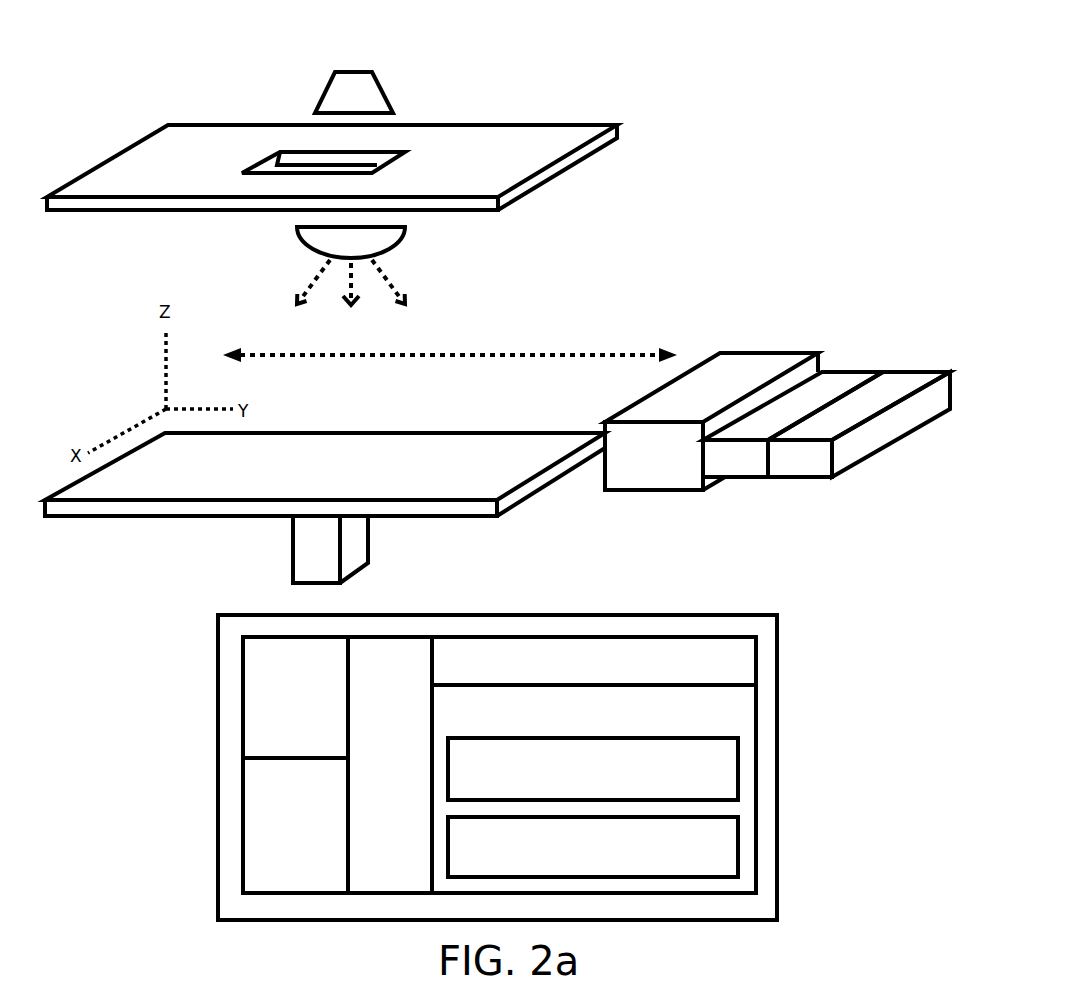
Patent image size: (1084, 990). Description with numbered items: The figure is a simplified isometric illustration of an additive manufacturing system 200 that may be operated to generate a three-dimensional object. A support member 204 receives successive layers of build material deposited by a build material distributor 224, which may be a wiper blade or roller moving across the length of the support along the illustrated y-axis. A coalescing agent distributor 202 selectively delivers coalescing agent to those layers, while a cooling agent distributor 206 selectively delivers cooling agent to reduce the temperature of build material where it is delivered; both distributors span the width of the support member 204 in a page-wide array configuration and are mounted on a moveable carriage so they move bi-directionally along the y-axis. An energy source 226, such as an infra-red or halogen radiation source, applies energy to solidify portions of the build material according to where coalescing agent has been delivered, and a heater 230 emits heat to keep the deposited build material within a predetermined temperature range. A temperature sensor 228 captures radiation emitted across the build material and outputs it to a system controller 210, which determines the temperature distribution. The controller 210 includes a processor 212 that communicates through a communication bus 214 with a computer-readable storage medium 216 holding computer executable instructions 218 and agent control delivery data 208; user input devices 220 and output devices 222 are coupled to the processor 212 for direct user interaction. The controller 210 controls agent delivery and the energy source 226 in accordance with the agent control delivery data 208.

The additive manufacturing system 200 is at (779, 56).
The coalescing agent distributor 202 is at (895, 372).
The support member 204 is at (452, 433).
The cooling agent distributor 206 is at (827, 372).
The agent control delivery data 208 is at (593, 847).
The system controller 210 is at (216, 908).
The processor 212 is at (594, 661).
The communication bus 214 is at (390, 765).
The computer-readable storage medium 216 is at (757, 765).
The computer executable instructions 218 is at (593, 769).
The user input devices 220 is at (295, 825).
The output devices 222 is at (295, 697).
The build material distributor 224 is at (730, 352).
The energy source 226 is at (403, 232).
The temperature sensor 228 is at (371, 73).
The heater 230 is at (527, 124).